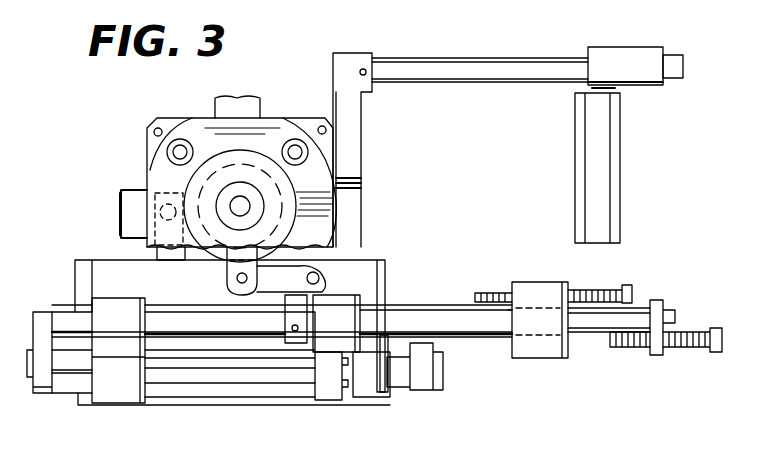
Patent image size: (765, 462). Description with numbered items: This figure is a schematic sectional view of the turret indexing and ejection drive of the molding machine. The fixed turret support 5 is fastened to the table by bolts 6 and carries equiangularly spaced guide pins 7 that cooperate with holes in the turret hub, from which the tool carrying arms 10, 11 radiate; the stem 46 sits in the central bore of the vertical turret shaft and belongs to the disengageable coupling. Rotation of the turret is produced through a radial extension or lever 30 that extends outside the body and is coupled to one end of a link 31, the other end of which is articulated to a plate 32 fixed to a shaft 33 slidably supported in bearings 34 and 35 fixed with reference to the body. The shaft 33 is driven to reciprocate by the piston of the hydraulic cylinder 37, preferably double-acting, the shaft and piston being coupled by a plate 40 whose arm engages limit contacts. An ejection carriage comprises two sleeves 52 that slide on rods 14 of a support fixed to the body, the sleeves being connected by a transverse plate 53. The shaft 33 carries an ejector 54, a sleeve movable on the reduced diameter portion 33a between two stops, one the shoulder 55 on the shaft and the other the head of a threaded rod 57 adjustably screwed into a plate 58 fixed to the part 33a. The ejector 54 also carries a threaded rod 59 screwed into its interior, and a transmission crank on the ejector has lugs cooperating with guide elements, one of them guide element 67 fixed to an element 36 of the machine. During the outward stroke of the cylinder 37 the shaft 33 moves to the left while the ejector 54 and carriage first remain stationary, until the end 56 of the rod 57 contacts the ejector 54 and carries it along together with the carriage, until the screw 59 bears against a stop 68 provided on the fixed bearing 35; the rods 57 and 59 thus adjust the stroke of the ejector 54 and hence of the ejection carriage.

The fixed turret support 5 is at (168, 128).
The bolts 6 is at (154, 132).
The guide pins 7 is at (182, 148).
The tool carrying arm 10 is at (132, 218).
The tool carrying arm 11 is at (240, 100).
The rods 14 is at (483, 62).
The radial extension or lever 30 is at (305, 248).
The link 31 is at (300, 265).
The plate 32 is at (295, 344).
The shaft 33 is at (237, 323).
The reduced diameter portion 33a is at (640, 312).
The bearing 34 is at (115, 343).
The bearing 35 is at (350, 345).
The element fixed to the machine 36 is at (100, 275).
The hydraulic cylinder 37 is at (187, 378).
The plate 40 is at (43, 385).
The stem 46 is at (236, 206).
The sleeves 52 is at (625, 57).
The transverse plate 53 is at (613, 195).
The ejector 54 is at (541, 350).
The shoulder 55 is at (510, 318).
The end of the rod 56 is at (612, 347).
The threaded rod 57 is at (635, 350).
The plate 58 is at (657, 300).
The threaded rod 59 is at (488, 290).
The guide element 67 is at (398, 373).
The stop 68 is at (363, 302).